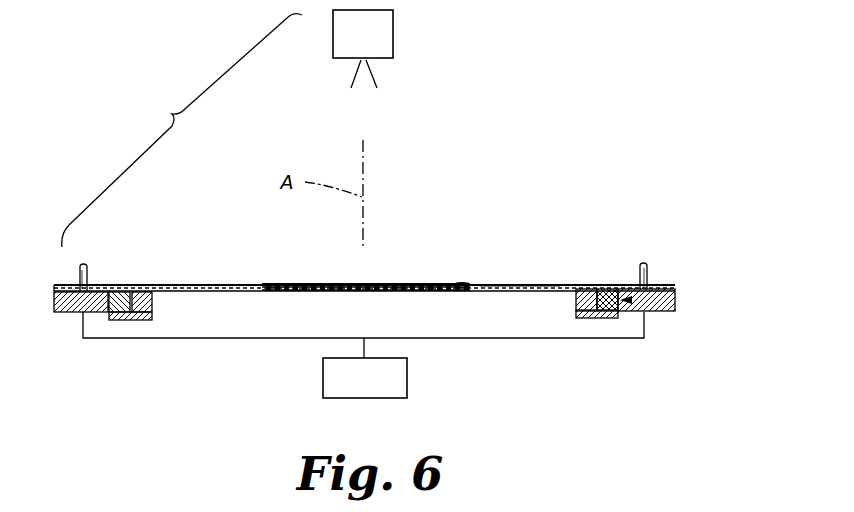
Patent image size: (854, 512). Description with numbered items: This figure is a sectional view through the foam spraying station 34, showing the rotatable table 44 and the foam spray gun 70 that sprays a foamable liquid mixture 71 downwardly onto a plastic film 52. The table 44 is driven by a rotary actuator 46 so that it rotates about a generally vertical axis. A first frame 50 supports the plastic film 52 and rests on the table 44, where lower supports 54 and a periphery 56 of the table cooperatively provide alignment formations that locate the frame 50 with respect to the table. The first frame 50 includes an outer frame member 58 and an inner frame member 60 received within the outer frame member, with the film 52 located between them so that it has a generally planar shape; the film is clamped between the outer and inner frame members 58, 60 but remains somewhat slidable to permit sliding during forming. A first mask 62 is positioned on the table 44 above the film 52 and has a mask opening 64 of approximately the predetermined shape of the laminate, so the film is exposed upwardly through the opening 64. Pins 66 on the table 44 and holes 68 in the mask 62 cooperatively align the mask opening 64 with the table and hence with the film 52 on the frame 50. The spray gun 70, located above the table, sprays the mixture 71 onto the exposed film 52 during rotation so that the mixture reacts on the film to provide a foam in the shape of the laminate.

The foam spraying station 34 is at (182, 130).
The rotatable table 44 is at (662, 329).
The rotary actuator 46 is at (408, 375).
The first frame 50 is at (643, 318).
The plastic film 52 is at (217, 292).
The lower supports 54 is at (140, 322).
The periphery 56 is at (55, 303).
The outer frame member 58 is at (108, 310).
The inner frame member 60 is at (148, 298).
The first mask 62 is at (557, 282).
The mask opening 64 is at (453, 283).
The pins 66 is at (88, 272).
The holes 68 is at (79, 280).
The foam spray gun 70 is at (403, 33).
The foamable liquid mixture 71 is at (378, 78).